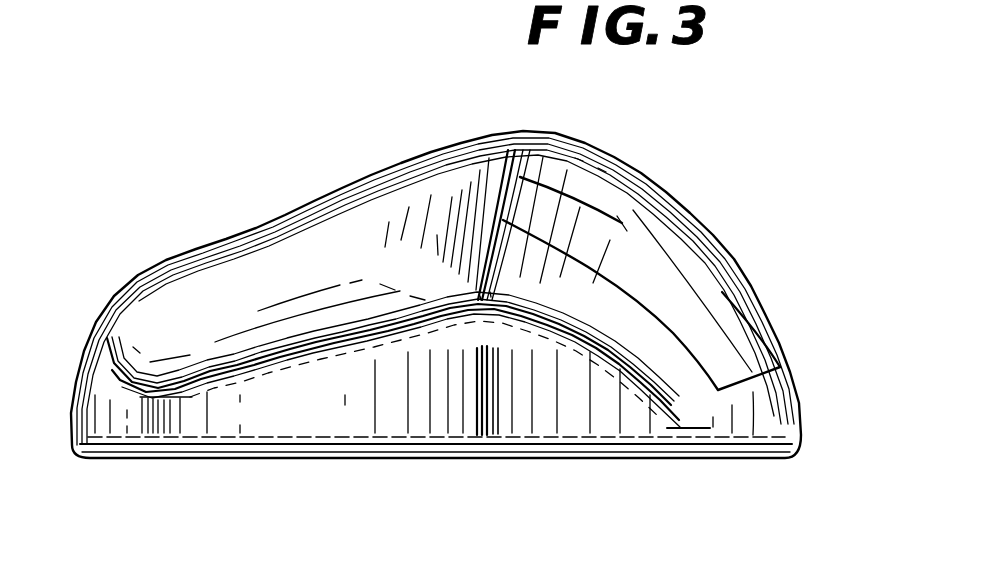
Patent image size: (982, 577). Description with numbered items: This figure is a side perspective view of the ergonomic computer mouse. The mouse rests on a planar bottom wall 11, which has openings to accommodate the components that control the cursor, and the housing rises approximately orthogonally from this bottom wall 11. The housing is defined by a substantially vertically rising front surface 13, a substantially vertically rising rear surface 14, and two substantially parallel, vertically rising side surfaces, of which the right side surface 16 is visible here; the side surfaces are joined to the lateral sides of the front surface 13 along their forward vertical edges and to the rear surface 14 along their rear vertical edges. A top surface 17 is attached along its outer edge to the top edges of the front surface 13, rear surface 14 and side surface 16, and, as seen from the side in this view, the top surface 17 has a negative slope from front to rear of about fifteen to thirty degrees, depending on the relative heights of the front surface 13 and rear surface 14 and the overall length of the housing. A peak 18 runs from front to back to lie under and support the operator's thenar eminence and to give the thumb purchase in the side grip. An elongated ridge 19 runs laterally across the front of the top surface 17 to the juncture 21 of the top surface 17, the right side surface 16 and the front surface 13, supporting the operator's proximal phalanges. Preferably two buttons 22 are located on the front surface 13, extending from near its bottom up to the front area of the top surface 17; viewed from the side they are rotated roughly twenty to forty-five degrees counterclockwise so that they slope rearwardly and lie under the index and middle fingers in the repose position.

The planar bottom wall 11 is at (236, 478).
The front surface 13 is at (780, 413).
The rear surface 14 is at (86, 397).
The side surface 16 is at (578, 422).
The top surface 17 is at (234, 283).
The peak 18 is at (317, 198).
The elongated ridge 19 is at (493, 193).
The juncture 21 is at (480, 300).
The buttons 22 is at (723, 303).